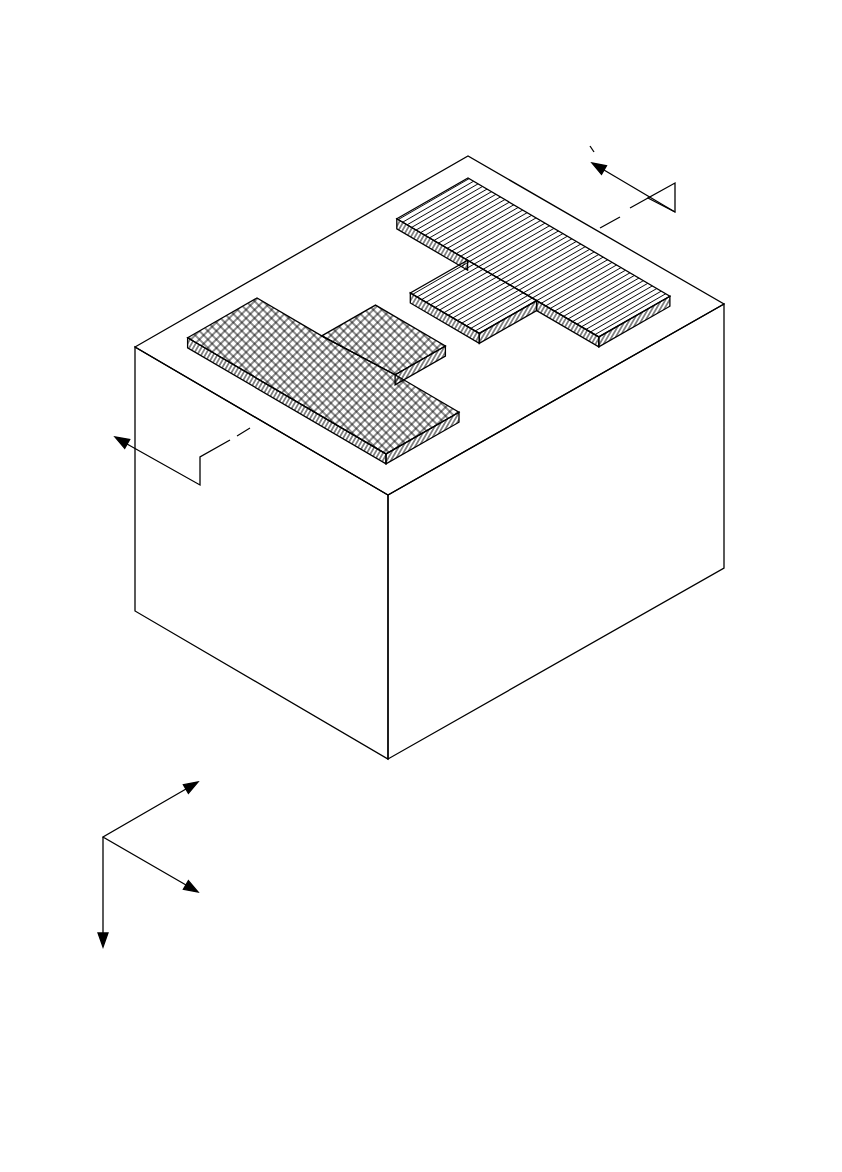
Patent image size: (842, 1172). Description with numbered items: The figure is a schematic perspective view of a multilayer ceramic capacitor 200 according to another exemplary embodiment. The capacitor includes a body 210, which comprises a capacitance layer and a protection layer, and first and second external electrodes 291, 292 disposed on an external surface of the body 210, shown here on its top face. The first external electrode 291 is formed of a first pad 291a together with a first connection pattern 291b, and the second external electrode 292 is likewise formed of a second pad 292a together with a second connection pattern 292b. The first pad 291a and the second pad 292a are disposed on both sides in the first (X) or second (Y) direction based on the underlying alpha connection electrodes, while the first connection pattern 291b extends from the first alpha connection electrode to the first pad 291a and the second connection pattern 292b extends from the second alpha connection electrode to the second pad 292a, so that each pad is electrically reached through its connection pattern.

The multilayer ceramic capacitor 200 is at (97, 68).
The body 210 is at (338, 262).
The first external electrode 291 is at (232, 187).
The first pad 291a is at (212, 327).
The first connection pattern 291b is at (350, 320).
The second external electrode 292 is at (480, 65).
The second pad 292a is at (486, 226).
The second connection pattern 292b is at (412, 290).